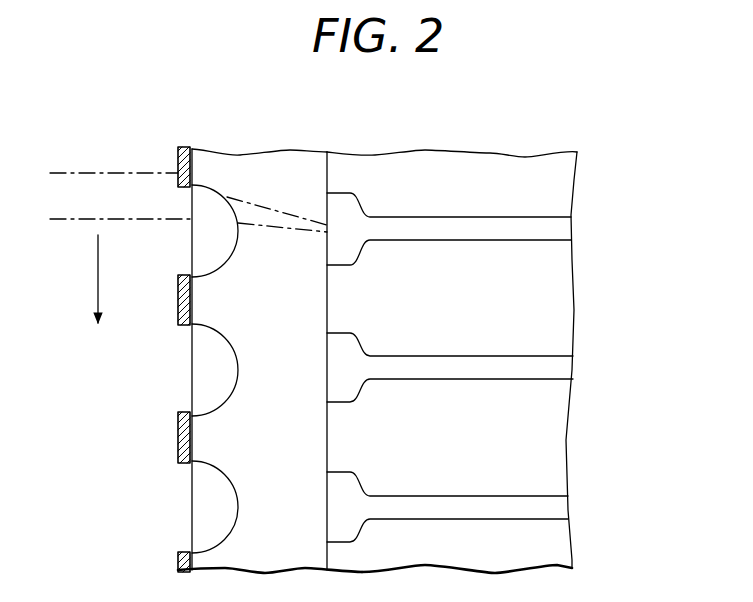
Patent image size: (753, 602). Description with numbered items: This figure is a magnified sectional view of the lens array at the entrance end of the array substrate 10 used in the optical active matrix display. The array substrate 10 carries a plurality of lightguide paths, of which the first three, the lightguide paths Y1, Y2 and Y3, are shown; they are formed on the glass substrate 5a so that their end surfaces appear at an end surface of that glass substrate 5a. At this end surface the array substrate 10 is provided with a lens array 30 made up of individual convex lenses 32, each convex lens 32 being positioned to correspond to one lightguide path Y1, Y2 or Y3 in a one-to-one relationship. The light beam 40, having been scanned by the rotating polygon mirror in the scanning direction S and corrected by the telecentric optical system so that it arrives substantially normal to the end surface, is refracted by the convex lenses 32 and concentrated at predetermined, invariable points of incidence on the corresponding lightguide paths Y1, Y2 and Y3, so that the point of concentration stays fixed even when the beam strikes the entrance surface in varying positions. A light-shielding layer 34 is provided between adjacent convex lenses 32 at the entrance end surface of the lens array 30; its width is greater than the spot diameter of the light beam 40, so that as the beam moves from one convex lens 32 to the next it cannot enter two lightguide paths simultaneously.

The array substrate 10 is at (452, 325).
The glass substrate 5a is at (530, 163).
The lens array 30 is at (252, 145).
The convex lens 32 is at (200, 257).
The light-shielding layer 34 is at (180, 150).
The light beam 40 is at (103, 178).
The lightguide path Y1 is at (558, 232).
The lightguide path Y2 is at (563, 370).
The lightguide path Y3 is at (560, 510).
The scanning direction S is at (97, 297).